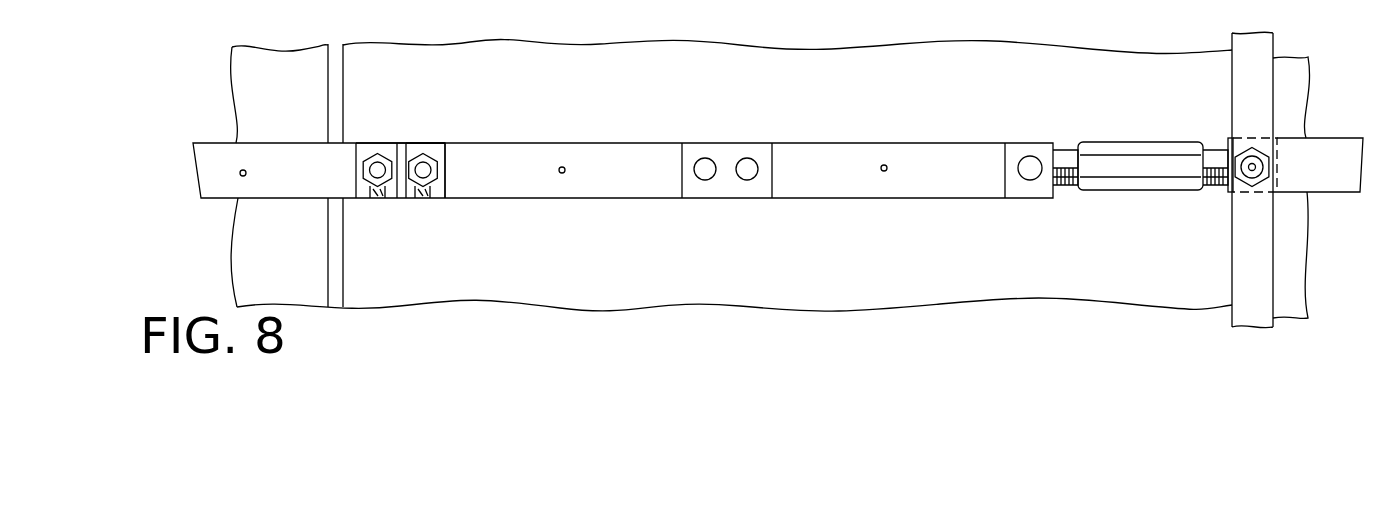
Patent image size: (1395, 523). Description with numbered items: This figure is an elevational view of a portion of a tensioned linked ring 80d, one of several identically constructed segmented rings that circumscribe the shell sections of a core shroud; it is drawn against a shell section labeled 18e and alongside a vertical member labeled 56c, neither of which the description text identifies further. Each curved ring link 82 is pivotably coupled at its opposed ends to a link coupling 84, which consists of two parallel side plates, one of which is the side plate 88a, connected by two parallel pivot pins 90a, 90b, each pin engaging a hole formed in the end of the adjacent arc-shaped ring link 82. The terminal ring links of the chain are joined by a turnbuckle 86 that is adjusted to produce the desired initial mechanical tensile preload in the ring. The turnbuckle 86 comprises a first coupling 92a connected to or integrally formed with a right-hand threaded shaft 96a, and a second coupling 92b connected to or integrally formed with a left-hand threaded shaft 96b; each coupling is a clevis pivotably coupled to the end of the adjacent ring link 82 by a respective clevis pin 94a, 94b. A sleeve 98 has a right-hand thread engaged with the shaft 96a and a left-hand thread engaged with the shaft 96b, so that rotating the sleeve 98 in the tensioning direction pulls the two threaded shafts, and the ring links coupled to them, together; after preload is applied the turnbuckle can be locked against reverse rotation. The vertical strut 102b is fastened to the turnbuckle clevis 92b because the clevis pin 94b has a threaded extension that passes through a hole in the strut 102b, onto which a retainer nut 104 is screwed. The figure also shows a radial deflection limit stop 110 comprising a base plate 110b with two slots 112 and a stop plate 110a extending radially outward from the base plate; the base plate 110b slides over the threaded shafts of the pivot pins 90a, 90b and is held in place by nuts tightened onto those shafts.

The wall panel 18e is at (620, 80).
The frame member 56c is at (345, 72).
The linked ring 80d is at (873, 212).
The ring link 82 is at (607, 153).
The link coupling 84 is at (418, 212).
The turnbuckle 86 is at (1136, 128).
The side plate 88a is at (363, 193).
The pivot pin 90a is at (379, 153).
The pivot pin 90b is at (437, 170).
The first coupling 92a is at (1027, 199).
The second coupling 92b is at (1242, 193).
The clevis pin 94a is at (1018, 163).
The clevis pin 94b is at (1271, 165).
The right-hand threaded shaft 96a is at (1069, 150).
The left-hand threaded shaft 96b is at (1220, 150).
The sleeve 98 is at (1142, 191).
The vertical strut 102b is at (1245, 267).
The retainer nut 104 is at (1258, 152).
The radial deflection limit stop 110 is at (358, 130).
The stop plate 110a is at (399, 199).
The base plate 110b is at (436, 148).
The slot 112 is at (372, 196).